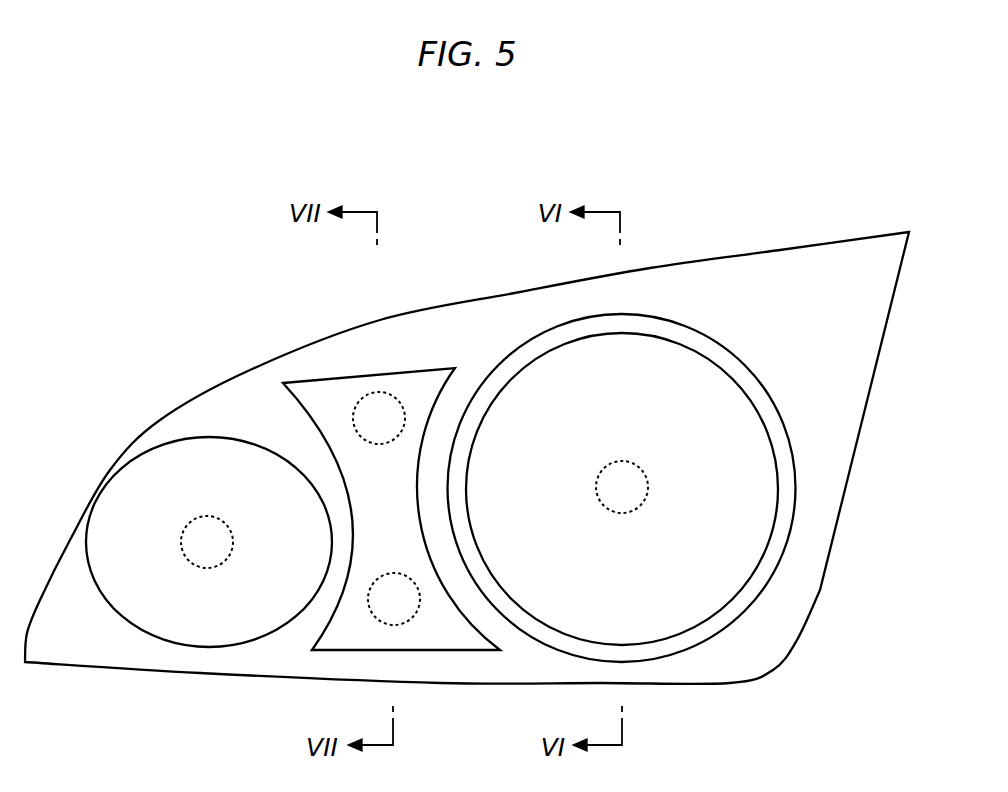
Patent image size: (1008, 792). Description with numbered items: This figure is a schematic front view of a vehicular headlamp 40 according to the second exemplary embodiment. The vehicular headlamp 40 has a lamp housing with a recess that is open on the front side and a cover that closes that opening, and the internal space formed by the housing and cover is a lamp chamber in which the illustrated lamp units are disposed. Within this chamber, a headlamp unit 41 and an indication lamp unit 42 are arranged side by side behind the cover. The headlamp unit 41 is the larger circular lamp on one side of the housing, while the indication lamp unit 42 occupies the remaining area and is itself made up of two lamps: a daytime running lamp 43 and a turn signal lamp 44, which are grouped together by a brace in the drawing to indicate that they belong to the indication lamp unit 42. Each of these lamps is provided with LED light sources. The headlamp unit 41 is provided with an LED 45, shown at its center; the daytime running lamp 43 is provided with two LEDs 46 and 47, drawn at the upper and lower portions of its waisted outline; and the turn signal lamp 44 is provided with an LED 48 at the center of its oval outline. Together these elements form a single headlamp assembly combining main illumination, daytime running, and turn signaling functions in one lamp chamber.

The vehicular headlamp 40 is at (857, 184).
The headlamp unit 41 is at (670, 318).
The indication lamp unit 42 is at (163, 243).
The daytime running lamp 43 is at (305, 381).
The turn signal lamp 44 is at (202, 437).
The LED 45 is at (633, 510).
The LED 46 is at (379, 392).
The LED 47 is at (403, 623).
The LED 48 is at (210, 568).